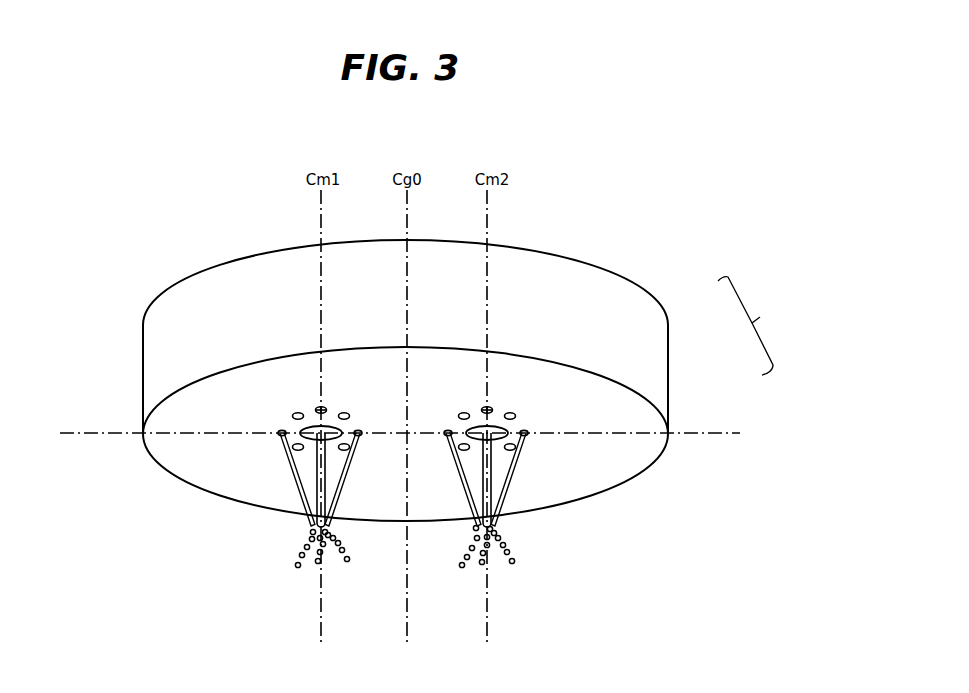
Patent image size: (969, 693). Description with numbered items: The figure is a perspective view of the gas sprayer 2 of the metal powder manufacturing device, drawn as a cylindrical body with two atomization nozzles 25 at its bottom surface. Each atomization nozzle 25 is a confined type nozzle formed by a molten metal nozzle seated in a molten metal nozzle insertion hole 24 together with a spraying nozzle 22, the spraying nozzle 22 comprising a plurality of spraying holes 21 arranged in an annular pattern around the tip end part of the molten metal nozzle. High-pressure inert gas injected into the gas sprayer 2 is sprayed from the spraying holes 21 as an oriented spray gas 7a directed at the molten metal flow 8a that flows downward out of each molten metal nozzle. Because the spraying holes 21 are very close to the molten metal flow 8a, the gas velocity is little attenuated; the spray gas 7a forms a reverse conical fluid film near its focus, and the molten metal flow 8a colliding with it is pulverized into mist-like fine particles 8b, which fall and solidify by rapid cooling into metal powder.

The gas sprayer 2 is at (603, 268).
The spraying holes 21 is at (280, 428).
The spraying nozzles 22 is at (756, 326).
The molten metal nozzle insertion holes 24 is at (313, 427).
The atomization nozzles 25 is at (265, 452).
The spray gas 7a is at (508, 490).
The molten metal flow 8a is at (497, 502).
The fine particles 8b is at (514, 564).